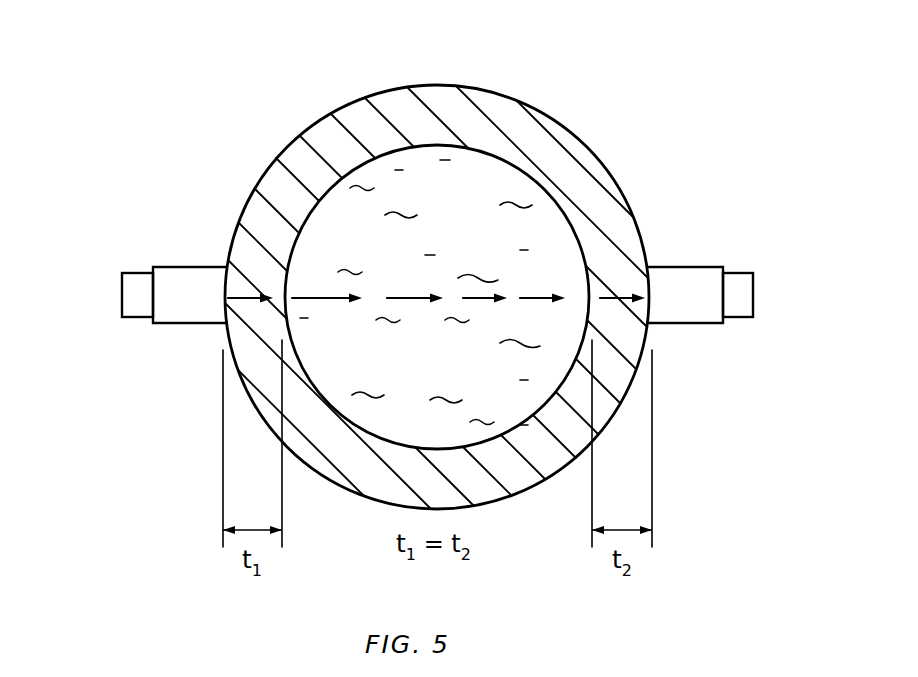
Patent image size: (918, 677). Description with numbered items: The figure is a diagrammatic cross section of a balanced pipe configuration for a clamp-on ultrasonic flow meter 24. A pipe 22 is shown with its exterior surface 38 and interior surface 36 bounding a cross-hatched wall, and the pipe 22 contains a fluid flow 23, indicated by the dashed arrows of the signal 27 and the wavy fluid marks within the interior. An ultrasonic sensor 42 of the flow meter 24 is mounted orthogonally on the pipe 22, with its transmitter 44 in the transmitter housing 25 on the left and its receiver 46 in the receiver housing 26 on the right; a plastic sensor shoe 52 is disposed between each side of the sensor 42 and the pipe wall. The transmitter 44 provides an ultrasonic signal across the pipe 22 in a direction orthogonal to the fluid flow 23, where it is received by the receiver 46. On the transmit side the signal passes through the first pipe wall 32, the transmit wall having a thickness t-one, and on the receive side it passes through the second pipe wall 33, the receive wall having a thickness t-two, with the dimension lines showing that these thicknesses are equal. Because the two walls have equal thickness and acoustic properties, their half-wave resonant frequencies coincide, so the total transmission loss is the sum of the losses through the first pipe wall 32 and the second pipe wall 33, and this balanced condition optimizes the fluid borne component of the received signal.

The pipe 22 is at (455, 264).
The fluid flow 23 is at (455, 367).
The ultrasonic flow meter 24 is at (682, 308).
The transmitter housing 25 is at (133, 320).
The receiver housing 26 is at (740, 322).
The signal 27 is at (323, 300).
The first pipe wall 32 is at (250, 278).
The second pipe wall 33 is at (615, 265).
The interior surface 36 is at (480, 148).
The exterior surface 38 is at (493, 92).
The ultrasonic sensor 42 is at (127, 300).
The transmitter 44 is at (123, 300).
The receiver 46 is at (781, 334).
The sensor shoe 52 is at (180, 307).